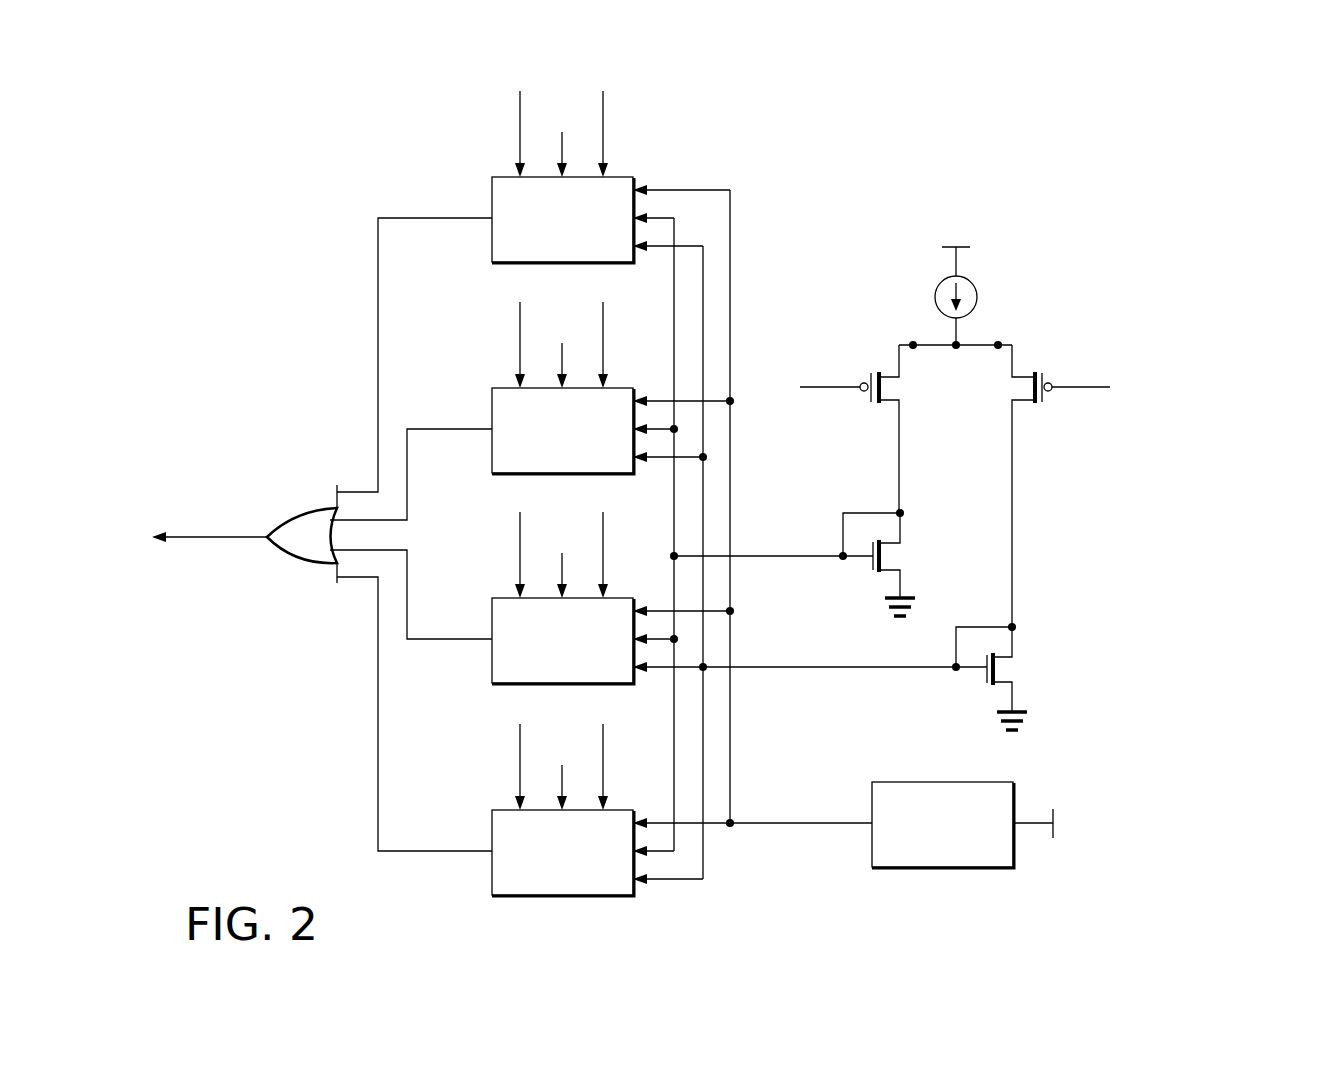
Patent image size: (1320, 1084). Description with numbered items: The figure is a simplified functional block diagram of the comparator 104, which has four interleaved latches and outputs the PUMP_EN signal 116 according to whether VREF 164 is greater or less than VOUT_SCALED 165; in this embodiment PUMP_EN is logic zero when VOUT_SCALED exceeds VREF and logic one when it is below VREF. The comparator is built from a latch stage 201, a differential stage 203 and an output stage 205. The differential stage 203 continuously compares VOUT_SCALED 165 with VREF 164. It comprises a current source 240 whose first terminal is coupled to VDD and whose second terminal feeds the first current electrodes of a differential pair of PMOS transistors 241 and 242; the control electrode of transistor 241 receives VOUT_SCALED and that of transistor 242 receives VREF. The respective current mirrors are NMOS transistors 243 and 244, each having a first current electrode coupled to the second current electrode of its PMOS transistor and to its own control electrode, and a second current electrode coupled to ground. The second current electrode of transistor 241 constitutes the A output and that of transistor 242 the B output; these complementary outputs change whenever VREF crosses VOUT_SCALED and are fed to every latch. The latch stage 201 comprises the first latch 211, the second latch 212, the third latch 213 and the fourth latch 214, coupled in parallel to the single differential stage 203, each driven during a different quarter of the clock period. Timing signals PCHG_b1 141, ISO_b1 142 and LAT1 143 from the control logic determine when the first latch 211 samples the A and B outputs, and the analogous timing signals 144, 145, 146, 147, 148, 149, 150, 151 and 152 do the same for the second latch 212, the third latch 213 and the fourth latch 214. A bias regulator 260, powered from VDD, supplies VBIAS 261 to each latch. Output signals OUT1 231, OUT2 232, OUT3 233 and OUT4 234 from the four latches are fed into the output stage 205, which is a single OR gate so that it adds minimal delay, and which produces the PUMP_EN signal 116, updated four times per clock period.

The comparator 104 is at (270, 852).
The PUMP_EN signal 116 is at (206, 540).
The PCHG_b1 timing signal 141 is at (519, 111).
The ISO_b1 timing signal 142 is at (560, 146).
The LAT1 timing signal 143 is at (632, 122).
The PCHG_b2 timing signal 144 is at (519, 322).
The ISO_b2 timing signal 145 is at (560, 357).
The LAT2 timing signal 146 is at (632, 333).
The PCHG_b3 timing signal 147 is at (519, 532).
The ISO_b3 timing signal 148 is at (560, 567).
The LAT3 timing signal 149 is at (632, 543).
The PCHG_b4 timing signal 150 is at (519, 744).
The ISO_b4 timing signal 151 is at (560, 779).
The LAT4 timing signal 152 is at (632, 755).
The VREF 164 is at (826, 392).
The VOUT_SCALED 165 is at (1080, 390).
The latch stage 201 is at (751, 318).
The differential stage 203 is at (1071, 303).
The output stage 205 is at (307, 508).
The latch_1 211 is at (624, 174).
The latch_2 212 is at (624, 385).
The latch_3 213 is at (624, 595).
The latch_4 214 is at (547, 897).
The OUT1 output signal 231 is at (378, 327).
The OUT2 output signal 232 is at (408, 472).
The OUT3 output signal 233 is at (408, 603).
The OUT4 output signal 234 is at (378, 749).
The current source 240 is at (938, 300).
The PMOS transistor 241 is at (1048, 371).
The PMOS transistor 242 is at (868, 373).
The NMOS transistor 243 is at (985, 678).
The NMOS transistor 244 is at (870, 570).
The bias regulator 260 is at (913, 782).
The VBIAS 261 is at (768, 826).